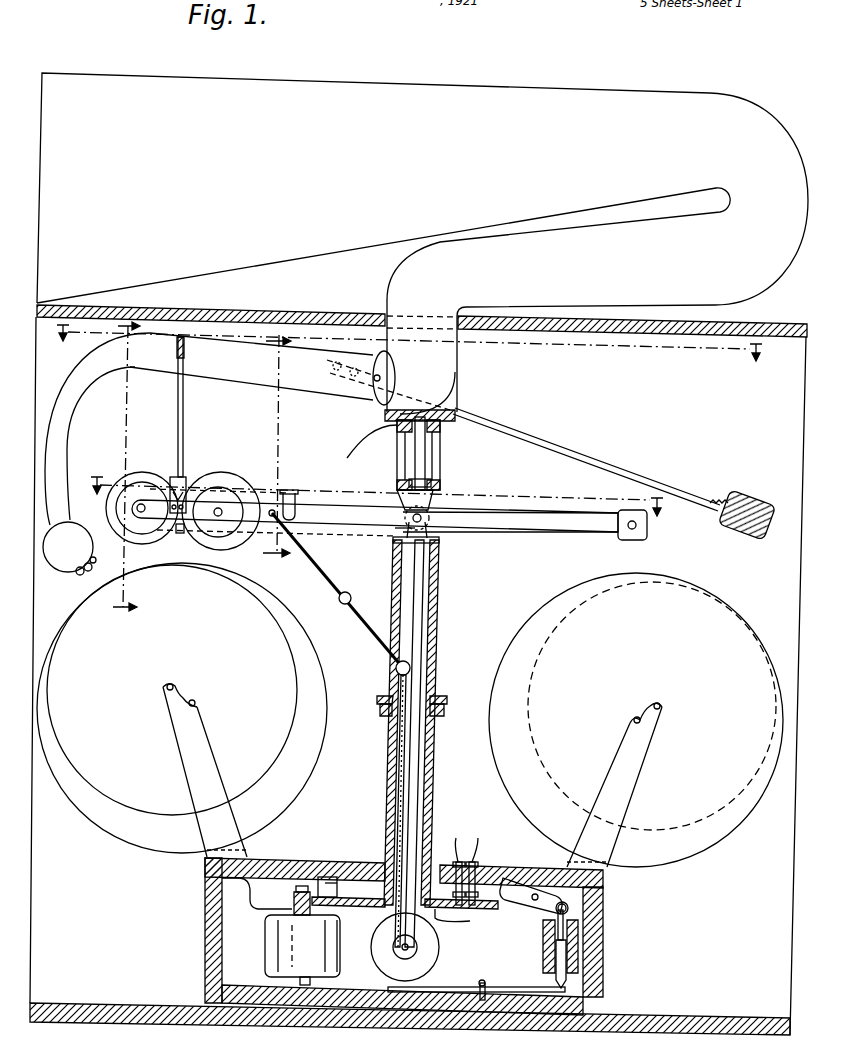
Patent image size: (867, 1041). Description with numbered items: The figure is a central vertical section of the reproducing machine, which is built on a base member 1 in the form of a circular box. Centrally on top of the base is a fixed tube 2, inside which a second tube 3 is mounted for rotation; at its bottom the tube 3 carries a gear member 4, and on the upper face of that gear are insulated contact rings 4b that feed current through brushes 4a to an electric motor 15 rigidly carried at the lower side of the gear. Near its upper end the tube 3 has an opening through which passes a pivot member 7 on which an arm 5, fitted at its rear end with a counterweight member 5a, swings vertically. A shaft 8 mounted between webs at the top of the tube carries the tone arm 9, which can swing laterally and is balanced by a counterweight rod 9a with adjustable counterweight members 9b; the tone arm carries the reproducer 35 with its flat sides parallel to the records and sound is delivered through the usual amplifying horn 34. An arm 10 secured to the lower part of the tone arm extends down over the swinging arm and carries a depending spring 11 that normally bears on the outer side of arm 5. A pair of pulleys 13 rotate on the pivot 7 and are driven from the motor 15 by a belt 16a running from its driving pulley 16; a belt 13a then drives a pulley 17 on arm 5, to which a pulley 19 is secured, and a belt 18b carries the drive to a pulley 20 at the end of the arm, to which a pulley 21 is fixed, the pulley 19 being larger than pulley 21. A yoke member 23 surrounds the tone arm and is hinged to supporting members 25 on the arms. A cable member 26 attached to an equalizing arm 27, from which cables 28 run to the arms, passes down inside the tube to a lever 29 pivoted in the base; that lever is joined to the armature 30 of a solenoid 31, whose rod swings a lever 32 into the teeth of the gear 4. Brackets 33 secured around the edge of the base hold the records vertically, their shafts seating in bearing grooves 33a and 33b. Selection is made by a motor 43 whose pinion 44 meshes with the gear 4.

The base member 1 is at (205, 905).
The fixed tube 2 is at (455, 772).
The second tube 3 is at (455, 660).
The gear member 4 is at (143, 316).
The brushes 4a is at (483, 868).
The insulated contact rings 4b is at (344, 878).
The arm 5 is at (493, 522).
The counterweight member 5a is at (636, 540).
The pivot member 7 is at (448, 498).
The shaft 8 is at (425, 462).
The tone arm 9 is at (247, 371).
The counterweight rod 9a is at (590, 462).
The counterweight members 9b is at (738, 500).
The arm 10 is at (359, 451).
The spring 11 is at (291, 517).
The pulleys 13 is at (423, 537).
The belt 13a is at (353, 535).
The electric motor 15 is at (424, 935).
The driving pulley 16 is at (413, 948).
The belt 16a is at (420, 734).
The pulley 17 is at (232, 500).
The belt 18b is at (180, 533).
The pulley 19 is at (230, 482).
The pulley 20 is at (125, 532).
The pulley 21 is at (112, 511).
The yoke member 23 is at (178, 412).
The supporting members 25 is at (187, 480).
The cable member 26 is at (367, 627).
The equalizing arm 27 is at (345, 605).
The cables 28 is at (318, 567).
The lever 29 is at (453, 987).
The armature 30 is at (598, 980).
The solenoid 31 is at (543, 935).
The lever 32 is at (603, 890).
The brackets 33 is at (220, 822).
The bearing groove 33a is at (196, 697).
The bearing groove 33b is at (171, 683).
The amplifying horn 34 is at (453, 105).
The reproducer 35 is at (67, 562).
The selecting motor 43 is at (282, 935).
The pinion 44 is at (295, 898).